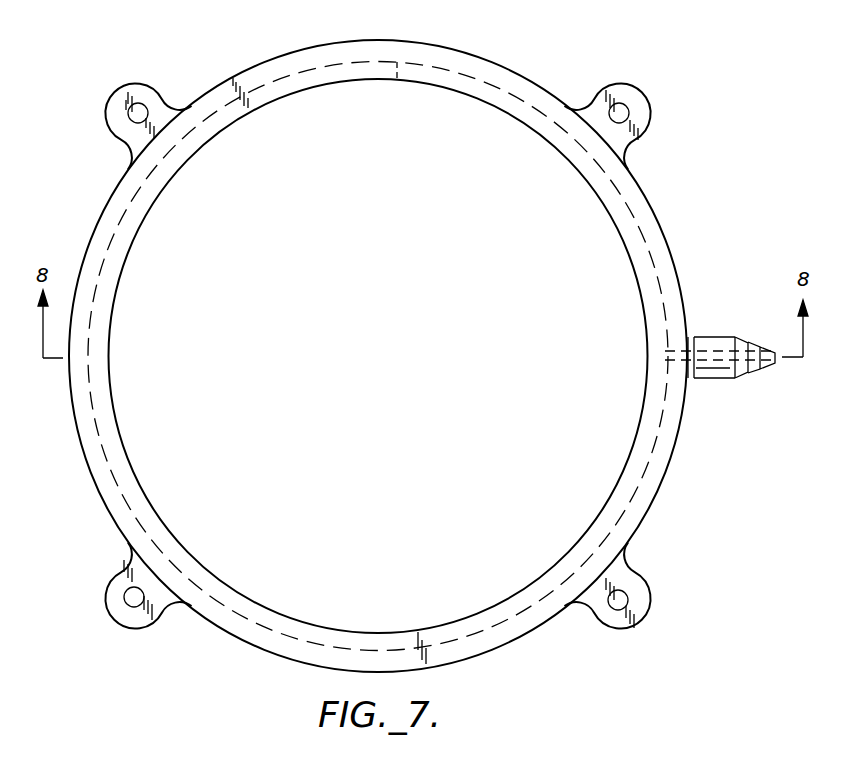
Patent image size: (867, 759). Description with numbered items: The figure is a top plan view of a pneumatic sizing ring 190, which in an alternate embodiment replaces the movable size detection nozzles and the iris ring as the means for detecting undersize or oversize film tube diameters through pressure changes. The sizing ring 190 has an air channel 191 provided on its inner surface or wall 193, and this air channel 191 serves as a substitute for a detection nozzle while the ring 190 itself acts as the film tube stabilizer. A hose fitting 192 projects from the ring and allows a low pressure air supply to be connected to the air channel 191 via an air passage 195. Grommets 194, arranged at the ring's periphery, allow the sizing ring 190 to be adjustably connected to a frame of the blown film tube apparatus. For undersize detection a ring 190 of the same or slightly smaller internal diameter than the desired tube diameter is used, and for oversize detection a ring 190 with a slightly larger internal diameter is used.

The sizing ring 190 is at (647, 45).
The air channel 191 is at (397, 80).
The hose fitting 192 is at (725, 378).
The inner surface or wall 193 is at (473, 97).
The grommets 194 is at (125, 90).
The air passage 195 is at (707, 352).